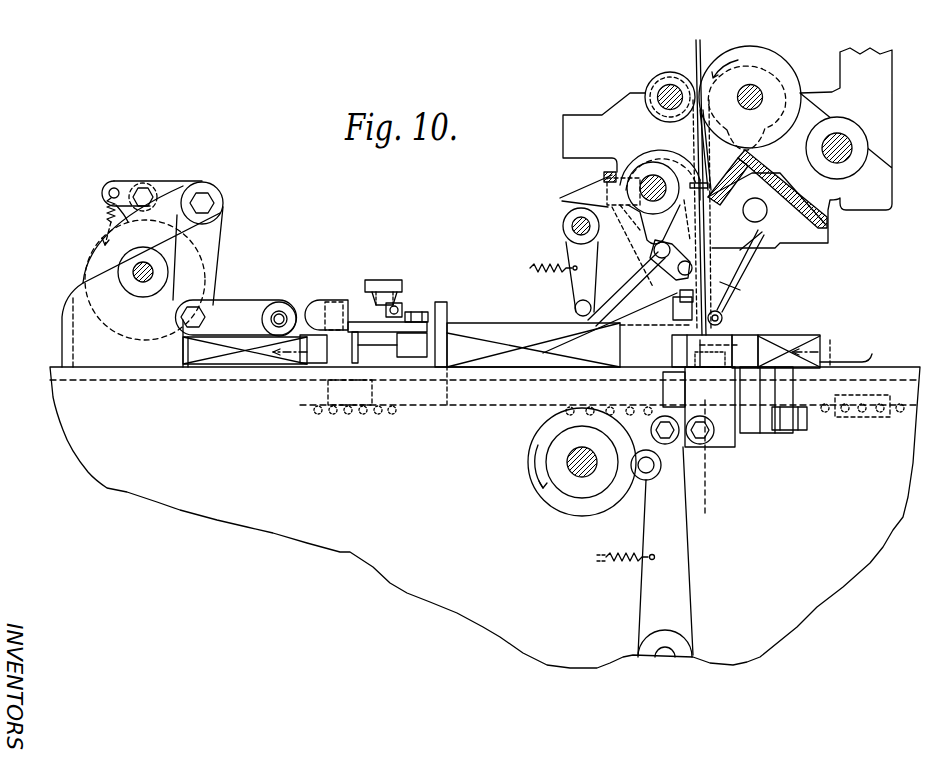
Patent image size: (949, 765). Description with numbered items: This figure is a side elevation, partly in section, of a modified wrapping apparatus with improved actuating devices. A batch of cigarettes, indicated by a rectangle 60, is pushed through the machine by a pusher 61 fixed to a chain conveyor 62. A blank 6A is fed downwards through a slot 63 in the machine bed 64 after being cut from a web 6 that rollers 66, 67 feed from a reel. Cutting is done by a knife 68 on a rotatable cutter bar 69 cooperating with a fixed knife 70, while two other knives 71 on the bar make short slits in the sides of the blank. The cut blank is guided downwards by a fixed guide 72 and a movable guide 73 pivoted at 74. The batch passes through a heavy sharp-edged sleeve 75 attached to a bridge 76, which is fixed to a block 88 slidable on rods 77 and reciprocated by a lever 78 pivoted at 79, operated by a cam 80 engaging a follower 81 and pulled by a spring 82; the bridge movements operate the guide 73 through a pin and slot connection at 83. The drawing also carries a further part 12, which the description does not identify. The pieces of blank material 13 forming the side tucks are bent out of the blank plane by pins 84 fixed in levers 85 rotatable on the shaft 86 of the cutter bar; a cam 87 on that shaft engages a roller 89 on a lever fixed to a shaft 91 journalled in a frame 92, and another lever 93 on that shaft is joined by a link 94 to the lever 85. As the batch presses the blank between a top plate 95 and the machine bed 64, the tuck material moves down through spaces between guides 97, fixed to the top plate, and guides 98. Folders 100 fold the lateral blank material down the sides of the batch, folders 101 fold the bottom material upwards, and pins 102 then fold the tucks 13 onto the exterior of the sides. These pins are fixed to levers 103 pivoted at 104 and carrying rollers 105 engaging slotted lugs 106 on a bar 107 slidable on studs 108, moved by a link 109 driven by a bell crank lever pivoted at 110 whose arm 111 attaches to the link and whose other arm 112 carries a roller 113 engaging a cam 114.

The web 6 is at (696, 55).
The blank 6A is at (742, 236).
The base frame 12 is at (655, 391).
The pieces of blank material 13 is at (670, 345).
The batch of cigarettes 60 is at (789, 339).
The pusher 61 is at (840, 340).
The chain conveyor 62 is at (888, 426).
The slot 63 is at (705, 389).
The machine bed 64 is at (880, 366).
The roller 66 is at (782, 63).
The roller 67 is at (668, 72).
The knife 68 is at (745, 176).
The cutter bar 69 is at (657, 140).
The fixed knife 70 is at (736, 148).
The knives 71 is at (575, 196).
The fixed guide 72 is at (750, 257).
The movable guide 73 is at (728, 292).
The pivot 74 is at (719, 314).
The sleeve 75 is at (720, 332).
The bridge 76 is at (757, 341).
The rods 77 is at (786, 431).
The lever 78 is at (688, 555).
The pivot 79 is at (655, 650).
The cam 80 is at (548, 503).
The follower 81 is at (652, 473).
The spring 82 is at (615, 562).
The pin and slot connection 83 is at (690, 355).
The pins 84 is at (695, 175).
The levers 85 is at (663, 280).
The shaft 86 is at (648, 180).
The cam 87 is at (573, 260).
The block 88 is at (725, 446).
The roller 89 is at (606, 177).
The shaft 91 is at (572, 230).
The frame 92 is at (818, 233).
The lever 93 is at (577, 280).
The link 94 is at (626, 287).
The top plate 95 is at (653, 313).
The guides 97 is at (672, 305).
The guides 98 is at (610, 324).
The folders 100 is at (513, 327).
The folders 101 is at (470, 370).
The pins 102 is at (345, 368).
The levers 103 is at (355, 322).
The pivot 104 is at (415, 312).
The rollers 105 is at (396, 303).
The slotted lugs 106 is at (368, 280).
The bar 107 is at (382, 292).
The studs 108 is at (338, 298).
The link 109 is at (248, 305).
The pivot 110 is at (216, 196).
The arm 111 is at (205, 259).
The arm 112 is at (183, 182).
The roller 113 is at (146, 184).
The cam 114 is at (108, 210).